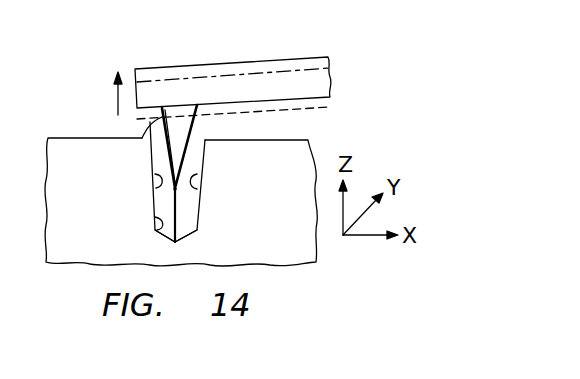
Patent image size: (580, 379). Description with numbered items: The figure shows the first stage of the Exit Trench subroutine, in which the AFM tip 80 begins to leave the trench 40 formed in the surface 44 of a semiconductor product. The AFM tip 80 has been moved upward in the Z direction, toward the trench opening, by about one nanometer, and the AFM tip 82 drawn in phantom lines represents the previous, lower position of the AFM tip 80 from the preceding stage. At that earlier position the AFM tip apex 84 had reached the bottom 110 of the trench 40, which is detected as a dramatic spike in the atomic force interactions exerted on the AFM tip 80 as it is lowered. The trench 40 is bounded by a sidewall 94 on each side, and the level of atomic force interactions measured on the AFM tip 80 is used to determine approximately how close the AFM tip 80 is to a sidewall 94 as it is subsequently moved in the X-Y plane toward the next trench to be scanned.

The trench 40 is at (200, 134).
The surface 44 is at (80, 138).
The AFM tip 80 is at (142, 141).
The AFM tip in phantom lines 82 is at (283, 71).
The AFM tip apex 84 is at (196, 228).
The sidewall 94 is at (153, 187).
The bottom 110 is at (156, 222).